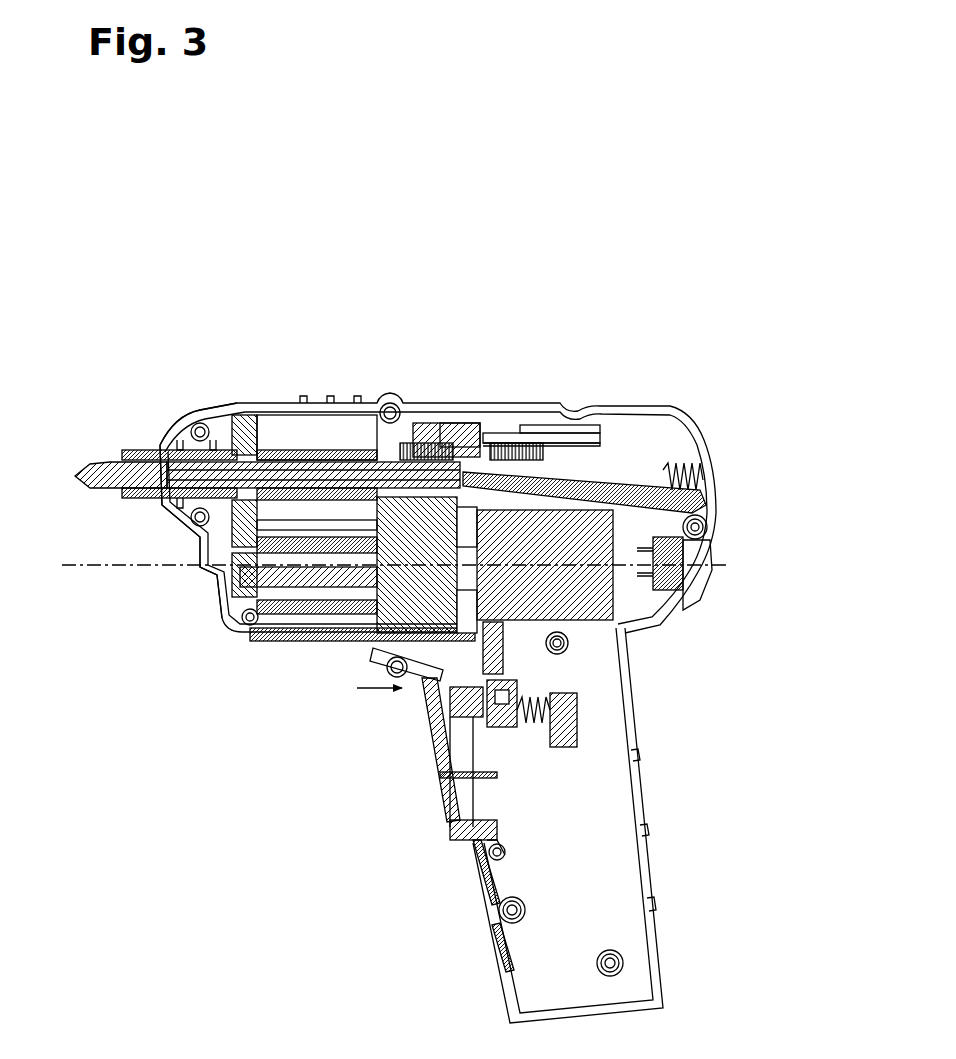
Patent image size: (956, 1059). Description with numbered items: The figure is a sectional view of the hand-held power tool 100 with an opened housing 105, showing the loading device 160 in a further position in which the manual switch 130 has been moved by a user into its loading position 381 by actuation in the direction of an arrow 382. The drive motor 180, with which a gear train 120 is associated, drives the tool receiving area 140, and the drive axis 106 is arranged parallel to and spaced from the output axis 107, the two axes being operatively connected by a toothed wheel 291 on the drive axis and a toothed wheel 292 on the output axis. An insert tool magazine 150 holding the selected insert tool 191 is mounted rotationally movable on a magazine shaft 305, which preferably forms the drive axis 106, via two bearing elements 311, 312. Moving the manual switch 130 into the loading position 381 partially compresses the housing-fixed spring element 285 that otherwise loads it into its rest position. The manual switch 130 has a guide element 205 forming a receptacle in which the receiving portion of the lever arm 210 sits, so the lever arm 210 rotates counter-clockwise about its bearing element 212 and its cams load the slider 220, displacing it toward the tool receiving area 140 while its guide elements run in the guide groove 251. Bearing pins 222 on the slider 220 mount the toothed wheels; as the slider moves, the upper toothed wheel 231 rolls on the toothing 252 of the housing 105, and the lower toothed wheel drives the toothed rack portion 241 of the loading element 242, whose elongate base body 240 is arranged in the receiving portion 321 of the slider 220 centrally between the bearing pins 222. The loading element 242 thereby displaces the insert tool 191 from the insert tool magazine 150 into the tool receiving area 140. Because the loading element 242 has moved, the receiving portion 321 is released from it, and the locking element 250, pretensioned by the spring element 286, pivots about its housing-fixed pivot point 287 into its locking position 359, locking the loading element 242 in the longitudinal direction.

The hand-held power tool 100 is at (94, 302).
The housing 105 is at (346, 402).
The drive axis 106 is at (90, 577).
The output axis 107 is at (70, 462).
The gear train 120 is at (367, 637).
The manual switch 130 is at (450, 822).
The tool receiving area 140 is at (155, 428).
The insert tool magazine 150 is at (276, 660).
The loading device 160 is at (667, 358).
The drive motor 180 is at (603, 603).
The insert tool 191 is at (140, 462).
The guide element 205 is at (520, 688).
The lever arm 210 is at (450, 705).
The bearing element 212 is at (450, 755).
The slider 220 is at (503, 445).
The bearing pins 222 is at (458, 440).
The toothed wheel 231 is at (432, 435).
The elongate base body 240 is at (428, 468).
The toothed rack portion 241 is at (402, 432).
The loading element 242 is at (282, 445).
The locking element 250 is at (651, 505).
The guide groove 251 is at (592, 436).
The toothing 252 is at (556, 432).
The spring element 285 is at (538, 727).
The spring element 286 is at (702, 470).
The pivot point 287 is at (702, 505).
The toothed wheel 291 is at (238, 595).
The toothed wheel 292 is at (247, 418).
The magazine shaft 305 is at (228, 568).
The bearing element 311 is at (250, 636).
The bearing element 312 is at (337, 637).
The receiving portion 321 is at (517, 460).
The locking position 359 is at (738, 545).
The loading position 381 is at (418, 796).
The arrow 382 is at (360, 692).